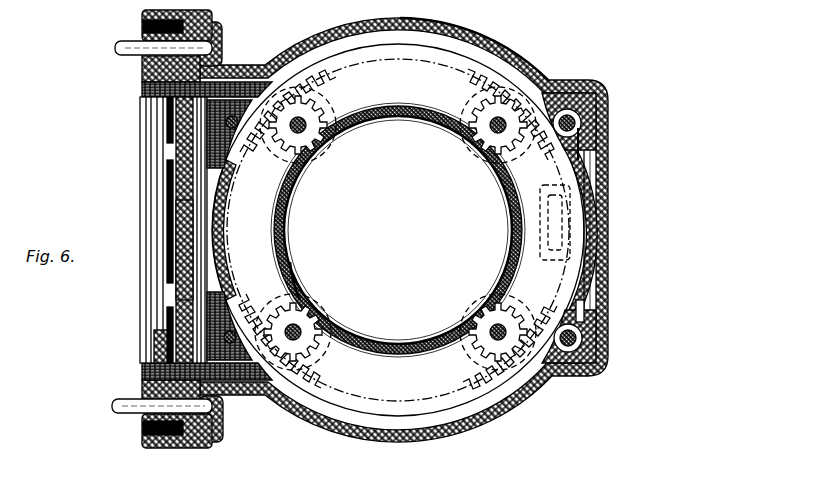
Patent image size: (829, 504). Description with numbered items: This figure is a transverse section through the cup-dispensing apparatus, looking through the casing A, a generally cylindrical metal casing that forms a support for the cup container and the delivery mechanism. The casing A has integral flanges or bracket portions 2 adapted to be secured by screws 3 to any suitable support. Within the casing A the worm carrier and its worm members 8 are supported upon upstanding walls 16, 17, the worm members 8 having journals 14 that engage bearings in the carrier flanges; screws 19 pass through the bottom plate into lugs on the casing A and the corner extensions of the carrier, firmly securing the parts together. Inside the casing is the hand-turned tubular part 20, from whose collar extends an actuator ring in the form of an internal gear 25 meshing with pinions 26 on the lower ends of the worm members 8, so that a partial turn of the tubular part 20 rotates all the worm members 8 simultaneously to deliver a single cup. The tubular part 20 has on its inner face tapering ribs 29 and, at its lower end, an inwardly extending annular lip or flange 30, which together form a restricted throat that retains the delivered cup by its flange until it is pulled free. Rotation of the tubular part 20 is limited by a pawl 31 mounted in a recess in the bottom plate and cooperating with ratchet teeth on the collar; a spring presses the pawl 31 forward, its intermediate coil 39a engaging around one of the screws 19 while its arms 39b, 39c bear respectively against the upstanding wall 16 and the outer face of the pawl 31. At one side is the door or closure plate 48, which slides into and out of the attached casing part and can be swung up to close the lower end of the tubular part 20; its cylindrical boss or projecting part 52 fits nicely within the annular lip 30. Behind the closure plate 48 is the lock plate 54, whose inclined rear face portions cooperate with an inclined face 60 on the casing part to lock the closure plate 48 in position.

The flanges or bracket portions 2 is at (222, 36).
The screws 3 is at (130, 56).
The worm members 8 is at (398, 230).
The journals 14 is at (293, 142).
The upstanding wall 16 is at (215, 229).
The upstanding wall 17 is at (592, 193).
The screws 19 is at (582, 120).
The tubular part 20 is at (293, 280).
The internal gear 25 is at (512, 148).
The pinions 26 is at (310, 120).
The tapering ribs 29 is at (404, 118).
The annular lip or flange 30 is at (292, 225).
The pawl 31 is at (578, 319).
The intermediate coil 39a is at (582, 127).
The upper arm 39b is at (580, 140).
The lower arm 39c is at (578, 157).
The door or closure plate 48 is at (177, 282).
The cylindrical boss or projecting part 52 is at (197, 208).
The lock plate 54 is at (170, 143).
The inclined face 60 is at (153, 315).
The casing A is at (529, 73).